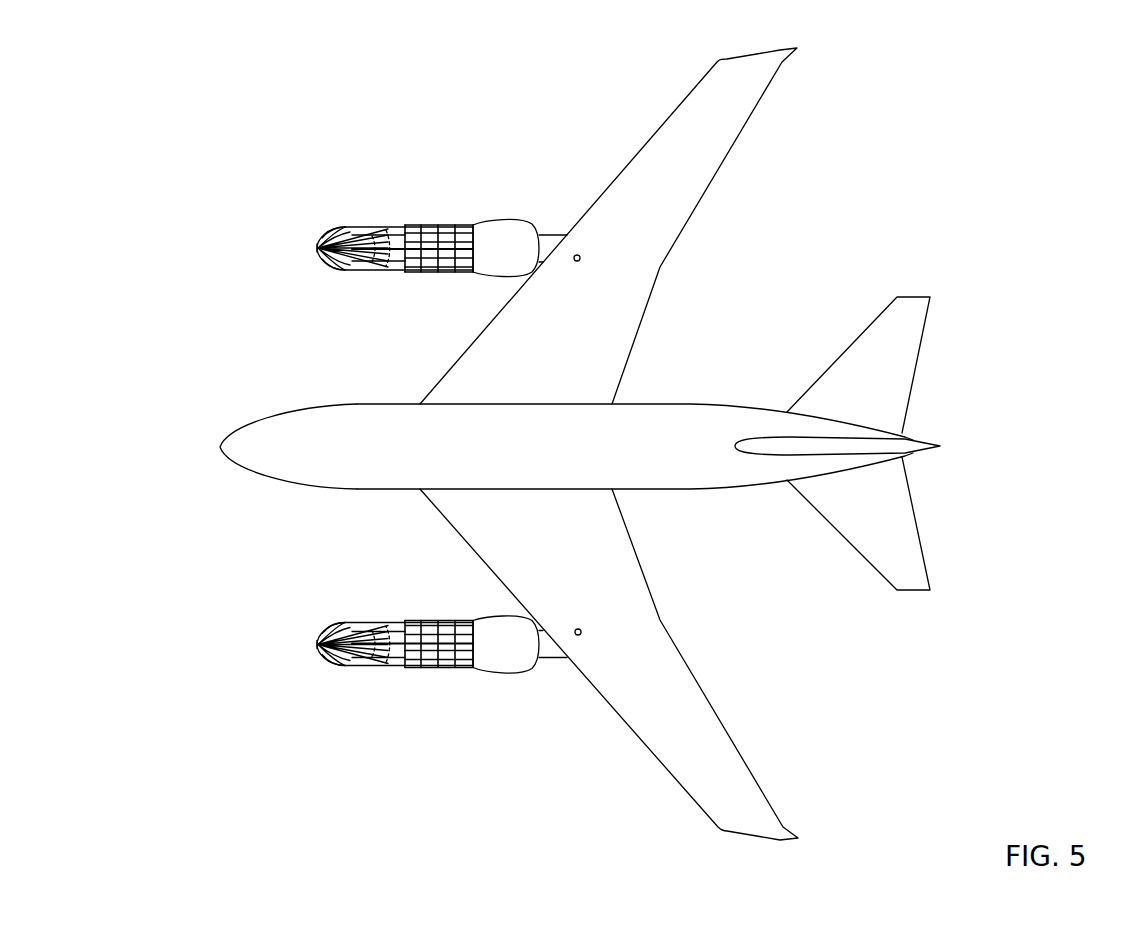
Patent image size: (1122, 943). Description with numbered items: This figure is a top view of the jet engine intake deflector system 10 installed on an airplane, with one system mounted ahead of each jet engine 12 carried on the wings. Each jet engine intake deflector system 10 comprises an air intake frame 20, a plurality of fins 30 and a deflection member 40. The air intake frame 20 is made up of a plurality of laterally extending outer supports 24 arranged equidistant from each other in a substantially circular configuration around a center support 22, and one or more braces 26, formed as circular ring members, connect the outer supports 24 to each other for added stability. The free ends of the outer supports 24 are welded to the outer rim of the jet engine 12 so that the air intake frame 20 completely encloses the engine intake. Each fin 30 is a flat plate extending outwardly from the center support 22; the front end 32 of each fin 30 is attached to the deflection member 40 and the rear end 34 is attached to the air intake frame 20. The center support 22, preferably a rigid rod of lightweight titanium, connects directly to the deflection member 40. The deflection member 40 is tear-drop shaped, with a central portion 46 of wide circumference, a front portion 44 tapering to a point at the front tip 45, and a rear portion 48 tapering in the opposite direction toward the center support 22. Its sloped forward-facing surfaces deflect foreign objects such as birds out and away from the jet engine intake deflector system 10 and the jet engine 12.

The jet engine intake deflector system 10 is at (156, 121).
The jet engine 12 is at (527, 220).
The air intake frame 20 is at (472, 192).
The center support 22 is at (443, 249).
The outer supports 24 is at (437, 271).
The braces 26 is at (453, 227).
The fins 30 is at (374, 203).
The front end 32 is at (353, 270).
The rear end 34 is at (413, 268).
The deflection member 40 is at (311, 228).
The front portion 44 is at (324, 259).
The front tip 45 is at (316, 248).
The central portion 46 is at (332, 227).
The rear portion 48 is at (373, 251).